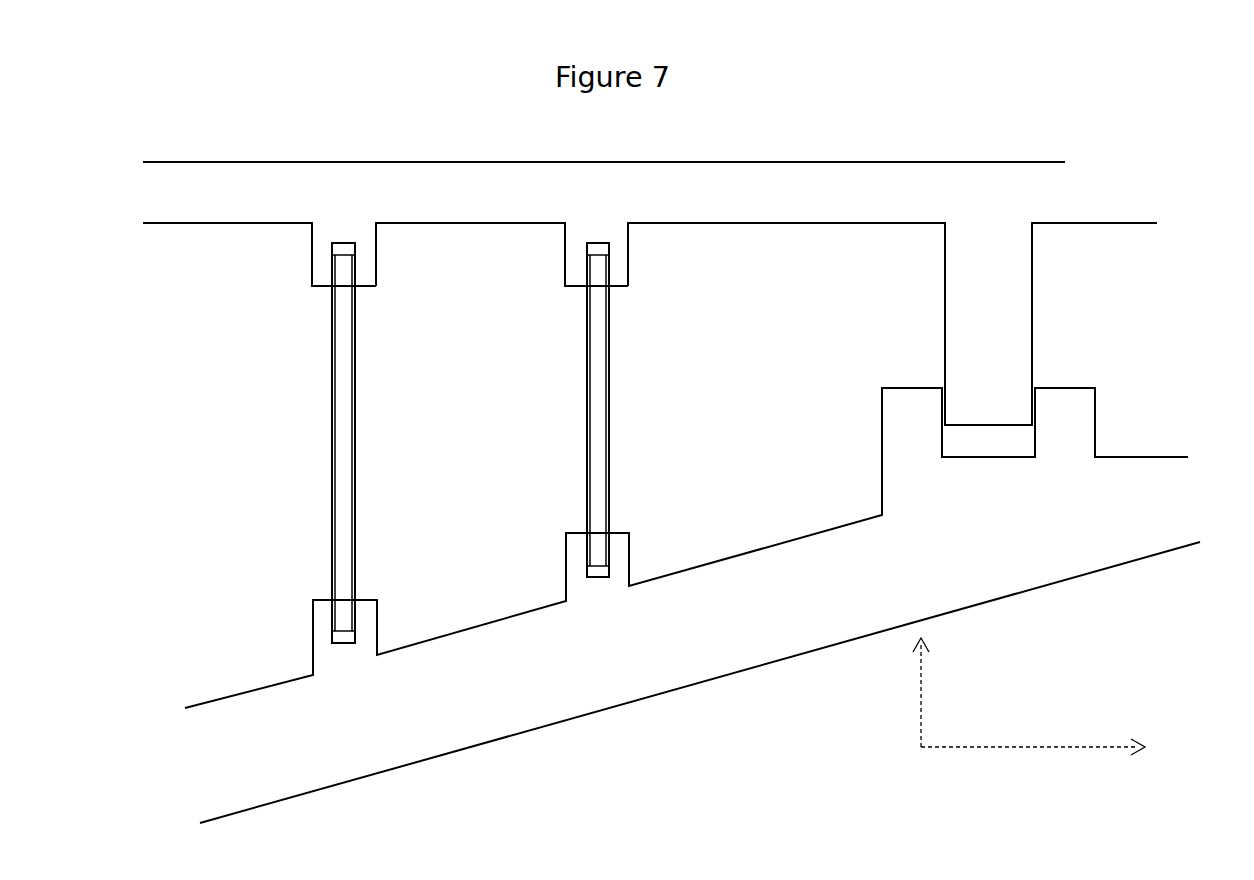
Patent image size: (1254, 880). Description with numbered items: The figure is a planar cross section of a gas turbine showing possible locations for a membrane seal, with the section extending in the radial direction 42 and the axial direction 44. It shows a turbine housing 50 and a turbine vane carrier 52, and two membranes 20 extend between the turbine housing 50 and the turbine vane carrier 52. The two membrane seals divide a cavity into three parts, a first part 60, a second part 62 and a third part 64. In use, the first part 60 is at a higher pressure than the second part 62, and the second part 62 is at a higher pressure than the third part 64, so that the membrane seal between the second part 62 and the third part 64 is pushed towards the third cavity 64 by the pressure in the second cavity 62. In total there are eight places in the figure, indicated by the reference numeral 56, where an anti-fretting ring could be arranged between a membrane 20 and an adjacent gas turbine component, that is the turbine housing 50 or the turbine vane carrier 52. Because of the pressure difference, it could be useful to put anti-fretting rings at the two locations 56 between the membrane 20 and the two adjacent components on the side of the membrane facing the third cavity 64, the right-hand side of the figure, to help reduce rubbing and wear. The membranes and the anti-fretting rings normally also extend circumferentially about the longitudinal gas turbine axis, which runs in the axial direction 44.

The membrane 20 is at (587, 360).
The radial direction 42 is at (921, 711).
The axial direction 44 is at (1044, 747).
The turbine housing 50 is at (866, 162).
The turbine vane carrier 52 is at (772, 662).
The anti-fretting ring location 56 is at (332, 263).
The first part of cavity 60 is at (228, 240).
The second part of cavity 62 is at (450, 250).
The third part of cavity 64 is at (692, 247).